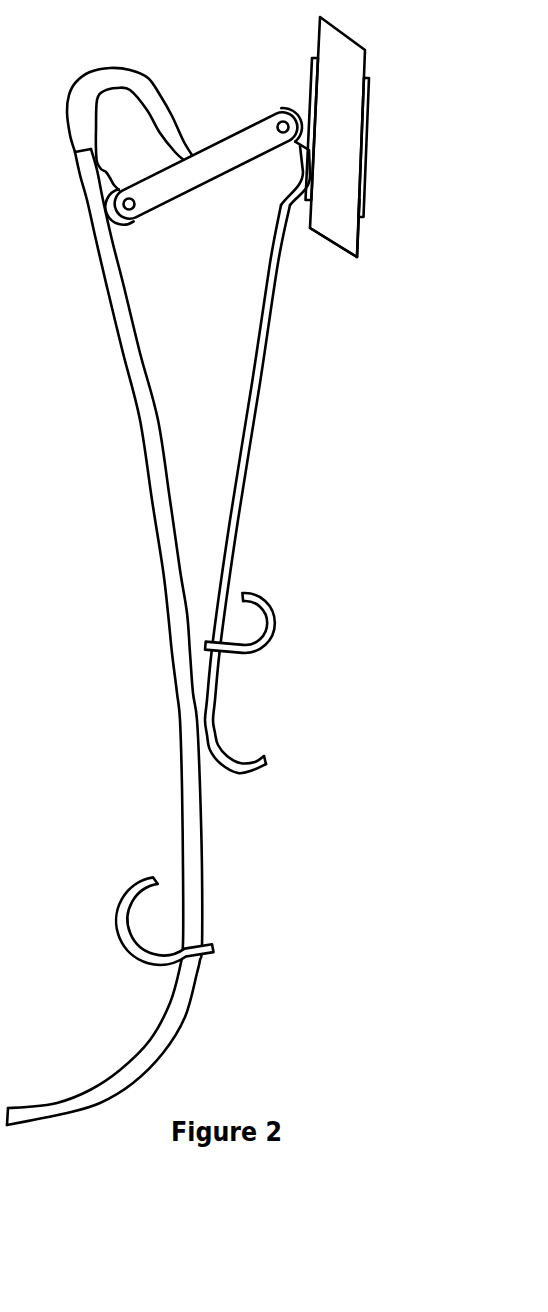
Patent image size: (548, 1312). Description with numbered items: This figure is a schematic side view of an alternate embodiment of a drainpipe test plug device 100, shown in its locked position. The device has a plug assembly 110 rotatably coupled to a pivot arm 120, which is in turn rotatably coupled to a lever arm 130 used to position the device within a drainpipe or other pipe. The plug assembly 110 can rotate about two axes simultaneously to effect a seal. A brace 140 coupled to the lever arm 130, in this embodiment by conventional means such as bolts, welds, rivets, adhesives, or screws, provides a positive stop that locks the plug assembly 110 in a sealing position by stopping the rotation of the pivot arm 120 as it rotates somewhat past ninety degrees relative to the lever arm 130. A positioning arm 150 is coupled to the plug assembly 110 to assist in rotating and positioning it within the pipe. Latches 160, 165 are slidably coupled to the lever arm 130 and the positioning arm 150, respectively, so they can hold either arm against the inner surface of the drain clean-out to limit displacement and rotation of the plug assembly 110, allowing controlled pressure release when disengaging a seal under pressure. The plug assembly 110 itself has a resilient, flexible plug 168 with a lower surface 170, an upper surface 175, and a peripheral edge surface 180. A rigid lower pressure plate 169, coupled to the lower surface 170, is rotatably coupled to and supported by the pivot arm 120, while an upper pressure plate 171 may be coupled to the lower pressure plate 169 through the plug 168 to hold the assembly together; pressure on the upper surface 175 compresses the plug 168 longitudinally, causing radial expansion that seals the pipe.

The drainpipe test plug device 100 is at (232, 562).
The plug assembly 110 is at (382, 165).
The pivot arm 120 is at (243, 130).
The lever arm 130 is at (123, 356).
The brace 140 is at (177, 126).
The positioning arm 150 is at (300, 458).
The latch 160 is at (137, 904).
The latch 165 is at (274, 610).
The plug 168 is at (337, 226).
The lower pressure plate 169 is at (304, 152).
The lower surface 170 is at (305, 213).
The upper pressure plate 171 is at (370, 163).
The upper surface 175 is at (360, 240).
The peripheral edge surface 180 is at (345, 127).